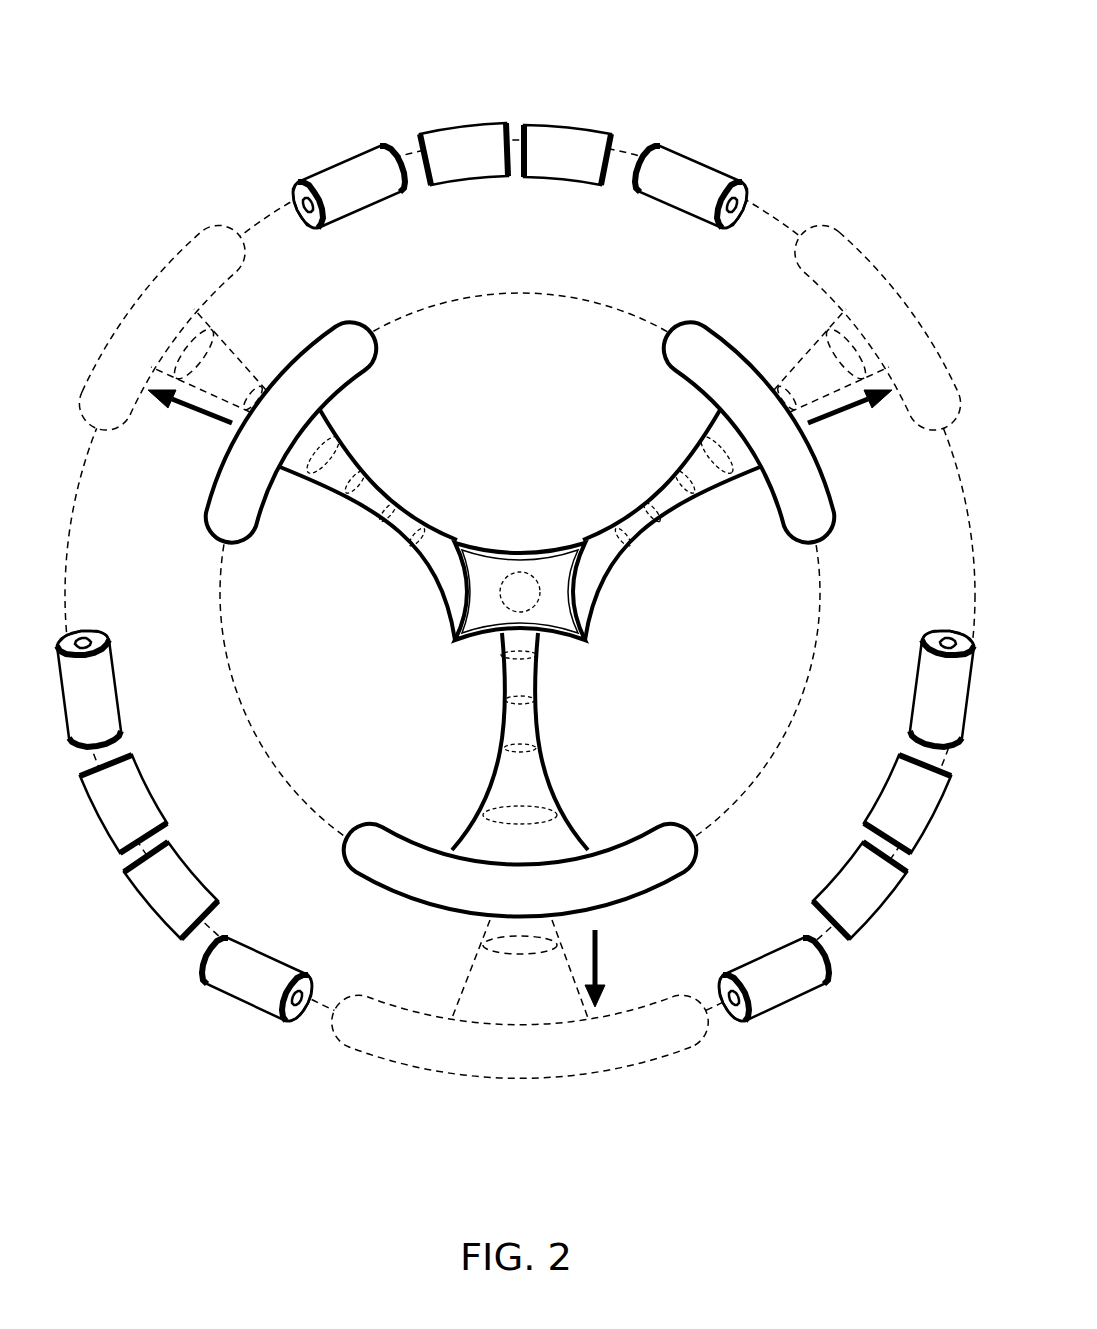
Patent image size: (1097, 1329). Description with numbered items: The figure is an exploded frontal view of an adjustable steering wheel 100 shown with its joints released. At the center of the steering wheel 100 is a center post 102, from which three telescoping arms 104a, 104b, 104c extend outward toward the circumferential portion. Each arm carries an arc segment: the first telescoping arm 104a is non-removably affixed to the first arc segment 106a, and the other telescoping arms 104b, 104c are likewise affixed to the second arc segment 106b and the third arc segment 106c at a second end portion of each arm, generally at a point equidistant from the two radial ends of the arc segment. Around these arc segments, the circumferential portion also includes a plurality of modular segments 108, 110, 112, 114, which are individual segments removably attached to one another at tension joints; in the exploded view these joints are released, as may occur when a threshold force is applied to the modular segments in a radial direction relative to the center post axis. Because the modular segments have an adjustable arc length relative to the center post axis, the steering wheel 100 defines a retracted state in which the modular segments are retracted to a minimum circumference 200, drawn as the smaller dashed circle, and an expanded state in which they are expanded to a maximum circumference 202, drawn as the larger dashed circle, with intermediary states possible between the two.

The steering wheel 100 is at (852, 113).
The center post 102 is at (517, 550).
The first telescoping arm 104a is at (376, 483).
The telescoping arm 104b is at (664, 483).
The telescoping arm 104c is at (550, 780).
The first arc segment 106a is at (364, 324).
The second arc segment 106b is at (676, 324).
The third arc segment 106c is at (693, 827).
The modular segment 108 is at (352, 148).
The modular segment 110 is at (458, 123).
The modular segment 112 is at (550, 122).
The modular segment 114 is at (657, 143).
The minimum circumference 200 is at (815, 595).
The maximum circumference 202 is at (963, 507).